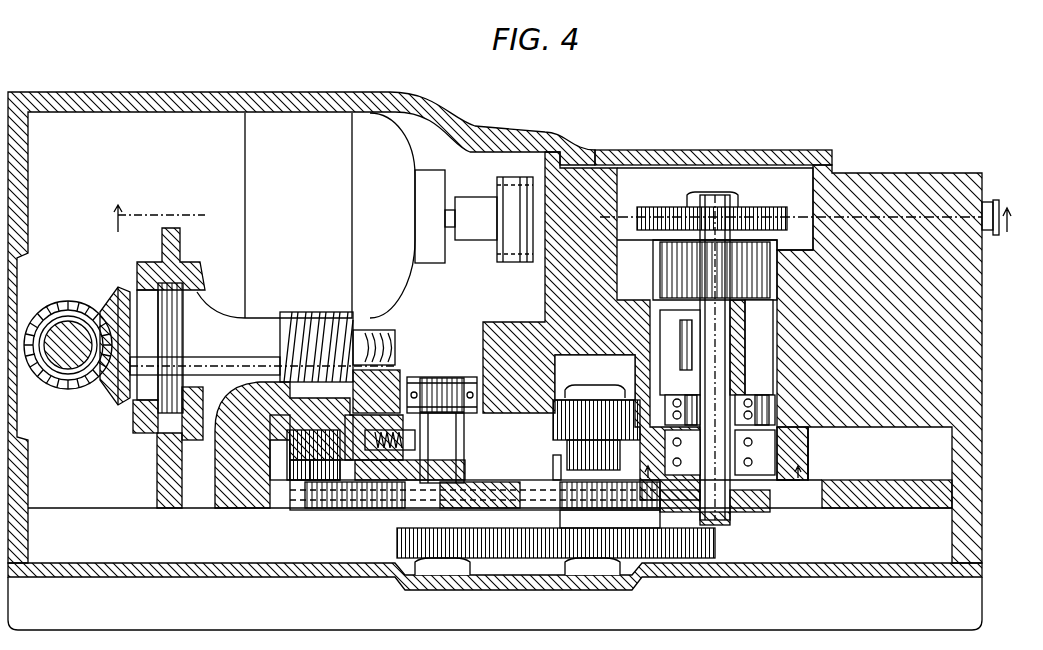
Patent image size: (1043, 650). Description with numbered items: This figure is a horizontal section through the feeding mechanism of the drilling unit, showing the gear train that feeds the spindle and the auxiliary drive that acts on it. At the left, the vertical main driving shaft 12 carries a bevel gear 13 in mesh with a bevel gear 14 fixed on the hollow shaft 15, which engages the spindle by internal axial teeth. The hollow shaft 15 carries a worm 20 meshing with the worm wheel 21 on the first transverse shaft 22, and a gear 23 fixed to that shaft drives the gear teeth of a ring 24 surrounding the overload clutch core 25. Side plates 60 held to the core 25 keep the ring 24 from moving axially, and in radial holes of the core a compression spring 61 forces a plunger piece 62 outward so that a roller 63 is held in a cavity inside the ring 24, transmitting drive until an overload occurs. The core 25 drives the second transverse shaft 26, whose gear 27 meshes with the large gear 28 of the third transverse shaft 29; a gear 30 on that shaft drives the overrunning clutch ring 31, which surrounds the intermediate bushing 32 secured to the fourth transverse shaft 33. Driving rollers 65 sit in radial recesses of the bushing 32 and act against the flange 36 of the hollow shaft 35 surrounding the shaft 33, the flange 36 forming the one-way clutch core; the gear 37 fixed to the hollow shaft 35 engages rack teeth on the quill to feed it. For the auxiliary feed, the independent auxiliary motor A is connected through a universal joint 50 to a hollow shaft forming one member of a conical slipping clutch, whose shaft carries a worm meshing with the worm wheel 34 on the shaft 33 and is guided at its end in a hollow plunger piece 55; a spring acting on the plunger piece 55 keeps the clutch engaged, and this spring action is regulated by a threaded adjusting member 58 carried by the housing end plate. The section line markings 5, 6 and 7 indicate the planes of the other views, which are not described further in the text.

The auxiliary motor A is at (292, 120).
The section line 5 is at (151, 218).
The section line 6 is at (823, 344).
The washer 7 is at (454, 447).
The vertical main driving shaft 12 is at (64, 325).
The bevel gear 13 is at (60, 382).
The bevel gear 14 is at (110, 398).
The hollow shaft 15 is at (218, 333).
The worm 20 is at (325, 312).
The worm wheel 21 is at (396, 350).
The first transverse shaft 22 is at (280, 470).
The gear 23 is at (298, 480).
The ring 24 is at (560, 392).
The overload clutch core 25 is at (480, 415).
The second transverse shaft 26 is at (428, 415).
The gear 27 is at (410, 546).
The large gear 28 is at (515, 560).
The third transverse shaft 29 is at (600, 560).
The gear 30 is at (596, 420).
The overrunning clutch ring 31 is at (810, 445).
The intermediate bushing 32 is at (765, 505).
The fourth transverse shaft 33 is at (712, 382).
The worm wheel 34 is at (650, 210).
The hollow shaft 35 is at (720, 425).
The flange 36 is at (745, 518).
The gear 37 is at (752, 345).
The universal joint 50 is at (525, 252).
The hollow plunger piece 55 is at (795, 185).
The threaded adjusting member 58 is at (996, 205).
The side plates 60 is at (530, 472).
The compression spring 61 is at (405, 440).
The plunger piece 62 is at (380, 466).
The roller 63 is at (340, 520).
The driving rollers 65 is at (690, 505).